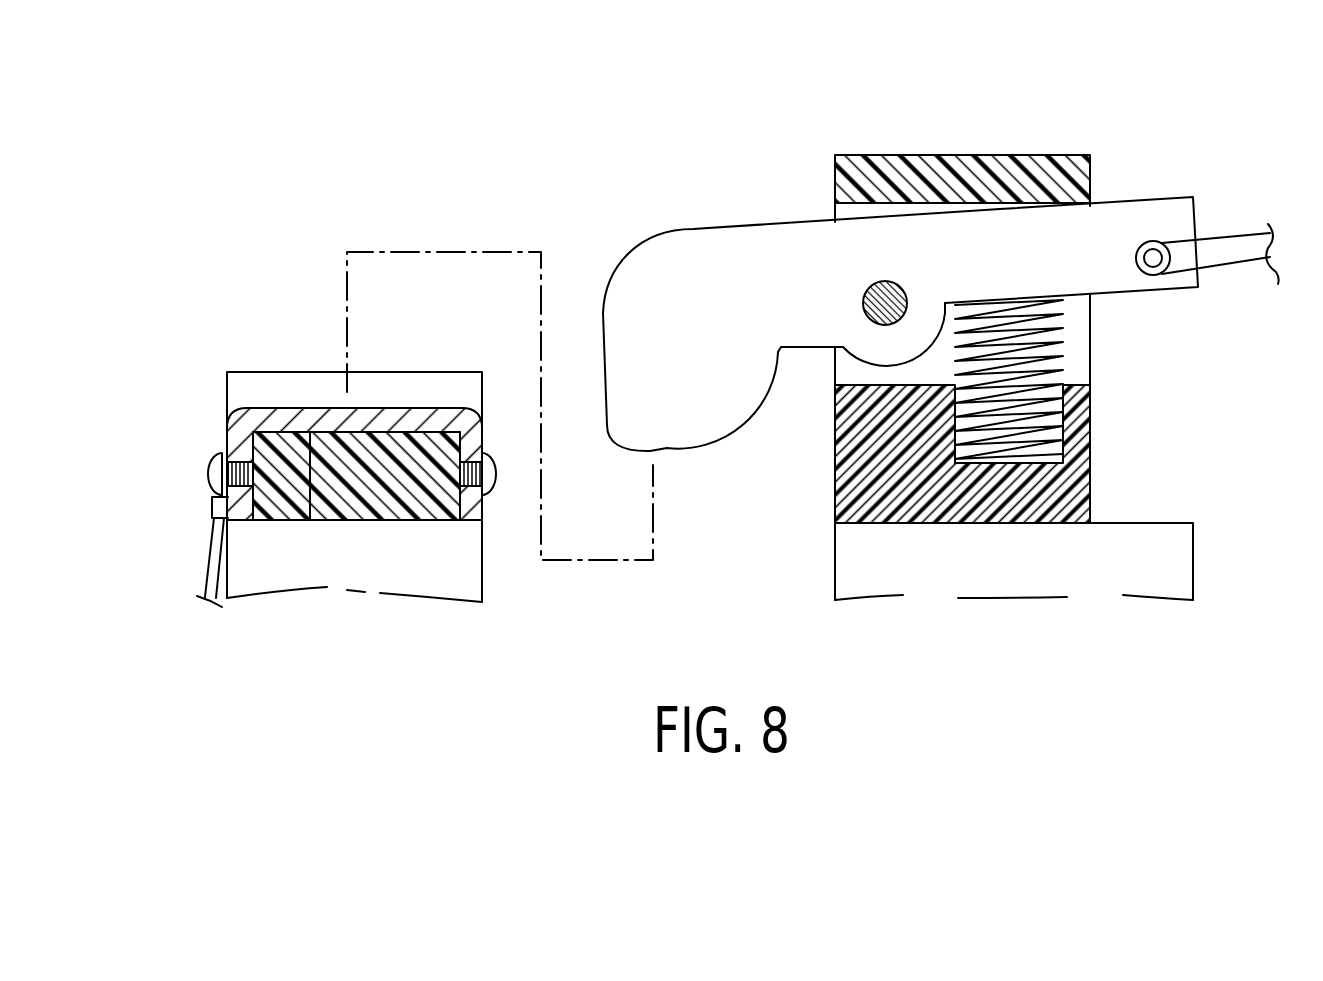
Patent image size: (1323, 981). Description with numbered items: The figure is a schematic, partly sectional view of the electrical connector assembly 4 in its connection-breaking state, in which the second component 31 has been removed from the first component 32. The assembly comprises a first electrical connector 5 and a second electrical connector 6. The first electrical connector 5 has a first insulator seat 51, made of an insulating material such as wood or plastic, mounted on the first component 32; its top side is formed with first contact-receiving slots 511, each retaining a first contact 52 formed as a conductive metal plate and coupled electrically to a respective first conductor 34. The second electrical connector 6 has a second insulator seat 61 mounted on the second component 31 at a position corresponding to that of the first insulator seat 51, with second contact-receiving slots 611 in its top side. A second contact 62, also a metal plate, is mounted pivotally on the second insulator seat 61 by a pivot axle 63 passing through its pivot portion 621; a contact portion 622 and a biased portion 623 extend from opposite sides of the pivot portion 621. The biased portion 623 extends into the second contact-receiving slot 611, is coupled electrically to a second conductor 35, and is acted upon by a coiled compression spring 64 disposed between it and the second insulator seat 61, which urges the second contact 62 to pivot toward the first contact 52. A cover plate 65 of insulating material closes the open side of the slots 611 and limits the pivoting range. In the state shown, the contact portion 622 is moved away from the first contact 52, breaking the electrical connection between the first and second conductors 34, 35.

The electrical connector assembly 4 is at (577, 207).
The first electrical connector 5 is at (352, 463).
The first insulator seat 51 is at (356, 556).
The first contact-receiving slots 511 is at (330, 520).
The first contacts 52 is at (408, 423).
The first component 32 is at (442, 572).
The first conductors 34 is at (210, 577).
The second electrical connector 6 is at (1025, 368).
The second insulator seat 61 is at (962, 541).
The second contact-receiving slots 611 is at (903, 387).
The second contacts 62 is at (900, 324).
The pivot portion 621 is at (881, 280).
The contact portion 622 is at (652, 430).
The biased portion 623 is at (1075, 267).
The pivot axle 63 is at (843, 347).
The compression springs 64 is at (1045, 349).
The cover plate 65 is at (993, 180).
The second conductors 35 is at (1213, 252).
The second component 31 is at (1085, 567).